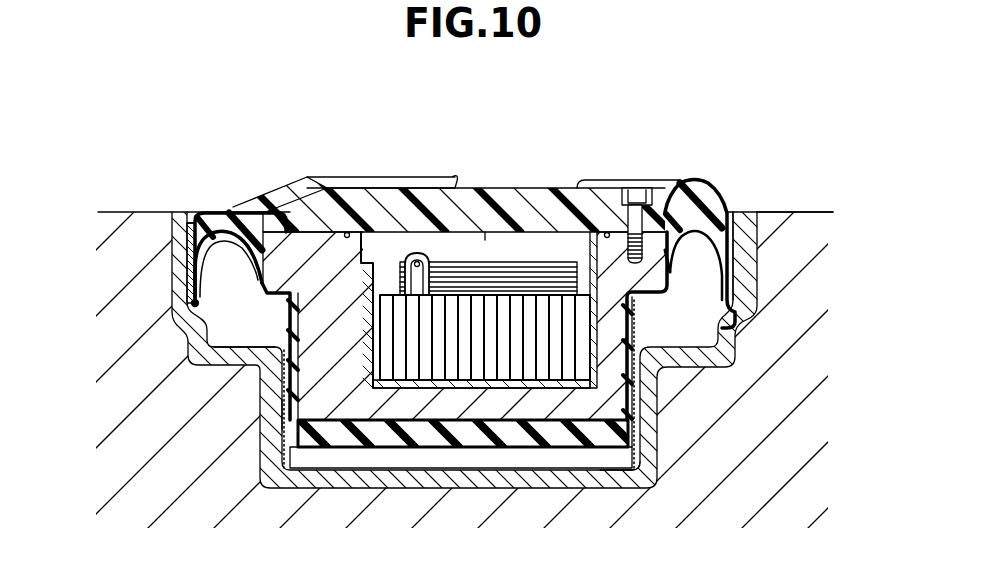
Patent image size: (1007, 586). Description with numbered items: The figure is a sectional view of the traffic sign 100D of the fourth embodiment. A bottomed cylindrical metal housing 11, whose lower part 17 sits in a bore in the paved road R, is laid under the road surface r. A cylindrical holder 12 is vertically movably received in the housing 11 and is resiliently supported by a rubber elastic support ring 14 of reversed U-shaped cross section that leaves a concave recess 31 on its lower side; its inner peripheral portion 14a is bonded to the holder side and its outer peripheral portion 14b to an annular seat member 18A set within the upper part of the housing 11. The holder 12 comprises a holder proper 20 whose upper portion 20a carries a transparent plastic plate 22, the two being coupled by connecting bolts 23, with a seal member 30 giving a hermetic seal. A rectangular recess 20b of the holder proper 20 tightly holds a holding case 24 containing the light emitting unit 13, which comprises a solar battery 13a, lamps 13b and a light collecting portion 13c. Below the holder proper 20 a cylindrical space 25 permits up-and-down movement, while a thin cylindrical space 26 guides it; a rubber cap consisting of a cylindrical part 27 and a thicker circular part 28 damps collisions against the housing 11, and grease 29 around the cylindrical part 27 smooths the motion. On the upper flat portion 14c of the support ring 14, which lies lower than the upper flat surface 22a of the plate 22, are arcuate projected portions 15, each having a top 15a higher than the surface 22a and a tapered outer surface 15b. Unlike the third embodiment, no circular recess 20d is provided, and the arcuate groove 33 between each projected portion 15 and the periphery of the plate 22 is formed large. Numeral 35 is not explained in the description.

The traffic sign 100D is at (692, 52).
The housing 11 is at (657, 392).
The holder 12 is at (637, 325).
The light emitting unit 13 is at (523, 277).
The solar battery 13a is at (442, 367).
The lamps 13b is at (418, 256).
The light collecting portion 13c is at (575, 265).
The elastic support ring 14 is at (222, 262).
The inner peripheral portion 14a is at (252, 213).
The outer peripheral portion 14b is at (187, 268).
The upper flat portion 14c is at (195, 225).
The arcuate projected portions 15 is at (281, 198).
The top 15a is at (383, 176).
The tapered outer surface 15b is at (717, 211).
The lower part 17 is at (653, 458).
The annular seat member 18A is at (196, 222).
The holder proper 20 is at (555, 433).
The upper portion 20a is at (304, 247).
The rectangular recess 20b is at (313, 405).
The circular recess 20d is at (652, 187).
The transparent plastic plate 22 is at (456, 186).
The upper flat surface 22a is at (485, 260).
The connecting bolts 23 is at (624, 190).
The holding case 24 is at (408, 385).
The cylindrical space 25 is at (337, 458).
The thin cylindrical space 26 is at (628, 445).
The cylindrical part 27 is at (280, 373).
The thicker circular part 28 is at (508, 438).
The grease 29 is at (280, 418).
The seal member 30 is at (347, 232).
The concave recess 31 is at (190, 237).
The arcuate groove 33 is at (659, 227).
The seal foot 35 is at (197, 304).
The paved road R is at (798, 250).
The paved road surface r is at (797, 212).